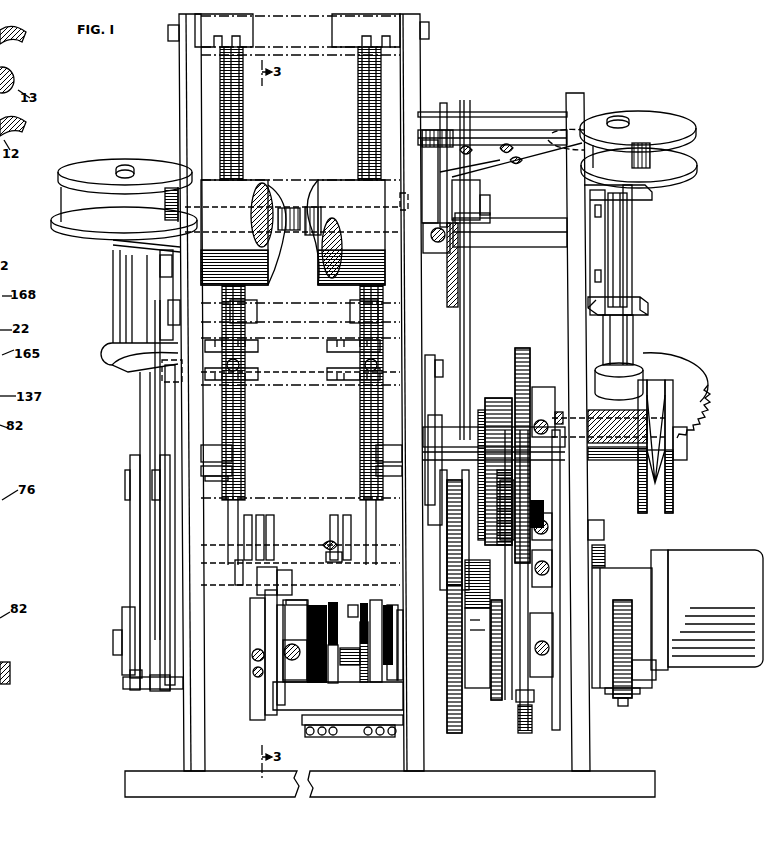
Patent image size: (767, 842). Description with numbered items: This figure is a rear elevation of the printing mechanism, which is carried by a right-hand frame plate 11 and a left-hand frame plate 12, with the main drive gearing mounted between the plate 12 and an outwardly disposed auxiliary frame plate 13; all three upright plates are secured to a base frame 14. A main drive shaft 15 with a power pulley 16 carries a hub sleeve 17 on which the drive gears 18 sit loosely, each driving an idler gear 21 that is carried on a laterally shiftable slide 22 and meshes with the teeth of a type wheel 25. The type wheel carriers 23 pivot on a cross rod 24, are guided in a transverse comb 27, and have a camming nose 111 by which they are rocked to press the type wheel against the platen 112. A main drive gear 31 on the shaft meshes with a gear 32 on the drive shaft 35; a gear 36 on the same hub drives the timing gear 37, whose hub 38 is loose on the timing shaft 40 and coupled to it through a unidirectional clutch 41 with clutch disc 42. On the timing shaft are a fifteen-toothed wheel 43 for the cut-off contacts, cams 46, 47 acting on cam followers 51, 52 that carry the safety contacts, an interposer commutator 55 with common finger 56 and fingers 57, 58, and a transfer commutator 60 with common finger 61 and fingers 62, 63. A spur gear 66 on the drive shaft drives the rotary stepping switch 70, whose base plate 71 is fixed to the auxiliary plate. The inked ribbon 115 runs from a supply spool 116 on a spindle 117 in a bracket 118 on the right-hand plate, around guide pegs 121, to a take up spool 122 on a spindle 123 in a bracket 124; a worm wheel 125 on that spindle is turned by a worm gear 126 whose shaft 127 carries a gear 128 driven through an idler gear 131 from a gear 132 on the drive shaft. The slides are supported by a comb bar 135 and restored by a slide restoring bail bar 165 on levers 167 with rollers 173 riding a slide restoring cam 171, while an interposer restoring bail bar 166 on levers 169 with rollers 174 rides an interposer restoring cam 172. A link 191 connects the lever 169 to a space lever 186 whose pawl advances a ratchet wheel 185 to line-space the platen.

The right-hand frame plate 11 is at (184, 120).
The left-hand frame plate 12 is at (415, 80).
The auxiliary frame plate 13 is at (577, 100).
The base frame 14 is at (145, 772).
The main drive shaft 15 is at (687, 454).
The pulley 16 is at (676, 502).
The gear hub sleeve 17 is at (214, 476).
The drive gear 18 is at (360, 434).
The idler gear 21 is at (362, 396).
The gear carrying slide member 22 is at (233, 364).
The type wheel carrier 23 is at (237, 33).
The cross rod 24 is at (248, 540).
The type wheel 25 is at (358, 134).
The transverse comb 27 is at (430, 43).
The main drive gear 31 is at (497, 398).
The drive gear 32 is at (505, 505).
The drive shaft 35 is at (322, 555).
The gear 36 is at (446, 530).
The timing gear 37 is at (459, 733).
The gear hub 38 is at (486, 684).
The timing shaft 40 is at (660, 662).
The unidirectional clutch mechanism 41 is at (528, 732).
The clutch disc 42 is at (528, 716).
The toothed wheel 43 is at (636, 680).
The cam 46 is at (250, 618).
The cam 47 is at (272, 625).
The cam follower 51 is at (256, 578).
The cam follower 52 is at (272, 590).
The interposer commutator 55 is at (300, 622).
The common contact finger 56 is at (330, 680).
The contact finger 57 is at (345, 680).
The contact finger 58 is at (300, 680).
The transfer commutator 60 is at (360, 610).
The common contact finger 61 is at (378, 680).
The contact finger 62 is at (398, 680).
The contact finger 63 is at (362, 680).
The spur gear 66 is at (608, 545).
The rotary stepping switch 70 is at (716, 558).
The base plate 71 is at (664, 548).
The camming nose 111 is at (503, 716).
The platen 112 is at (330, 263).
The inked ribbon 115 is at (500, 166).
The supply spool 116 is at (66, 174).
The spindle 117 is at (120, 170).
The bracket 118 is at (140, 366).
The guide pegs 121 is at (423, 160).
The take up spool 122 is at (678, 160).
The spindle 123 is at (628, 254).
The bracket 124 is at (640, 300).
The worm wheel 125 is at (688, 372).
The worm gear 126 is at (616, 446).
The shaft 127 is at (563, 420).
The gear 128 is at (522, 348).
The idler gear 131 is at (518, 510).
The gear 132 is at (540, 575).
The transverse comb bar 135 is at (327, 346).
The slide restoring bail bar 165 is at (327, 366).
The interposer restoring bail bar 166 is at (350, 312).
The lever 167 is at (178, 405).
The lever 169 is at (444, 360).
The slide restoring cam 171 is at (162, 690).
The interposer restoring cam 172 is at (476, 598).
The roller 173 is at (152, 462).
The roller 174 is at (130, 464).
The ratchet wheel 185 is at (450, 262).
The space lever 186 is at (462, 268).
The link 191 is at (468, 336).